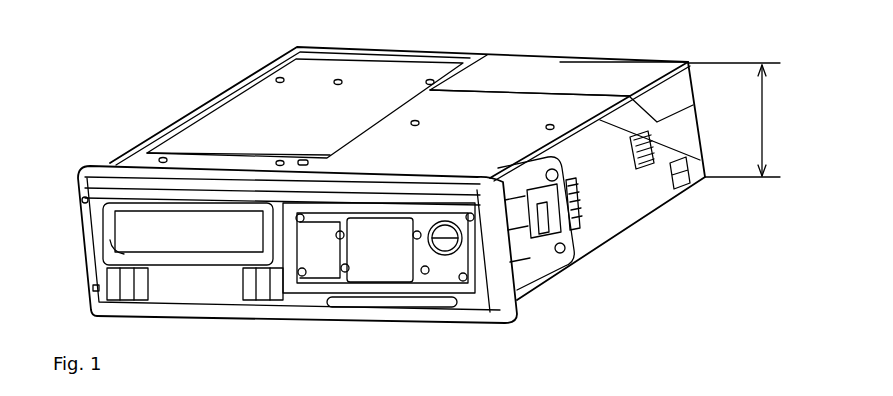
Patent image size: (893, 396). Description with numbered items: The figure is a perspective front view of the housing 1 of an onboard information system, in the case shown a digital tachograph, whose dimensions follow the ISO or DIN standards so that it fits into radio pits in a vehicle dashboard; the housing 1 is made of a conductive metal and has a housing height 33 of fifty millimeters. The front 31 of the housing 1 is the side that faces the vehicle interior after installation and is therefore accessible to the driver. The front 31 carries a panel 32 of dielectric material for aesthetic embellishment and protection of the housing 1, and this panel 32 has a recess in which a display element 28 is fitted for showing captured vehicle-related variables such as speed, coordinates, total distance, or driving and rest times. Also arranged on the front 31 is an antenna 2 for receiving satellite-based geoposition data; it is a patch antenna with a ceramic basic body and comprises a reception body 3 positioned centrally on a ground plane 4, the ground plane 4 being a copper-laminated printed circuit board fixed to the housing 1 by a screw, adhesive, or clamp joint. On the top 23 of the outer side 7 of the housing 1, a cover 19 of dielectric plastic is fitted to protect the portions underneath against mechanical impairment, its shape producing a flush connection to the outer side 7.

The housing 1 is at (613, 208).
The antenna 2 is at (452, 282).
The reception body 3 is at (378, 248).
The ground plane 4 is at (323, 257).
The outer side 7 is at (593, 108).
The cover 19 is at (610, 68).
The top 23 is at (505, 137).
The display element 28 is at (142, 223).
The front 31 is at (226, 285).
The panel 32 is at (505, 290).
The housing height 33 is at (742, 120).